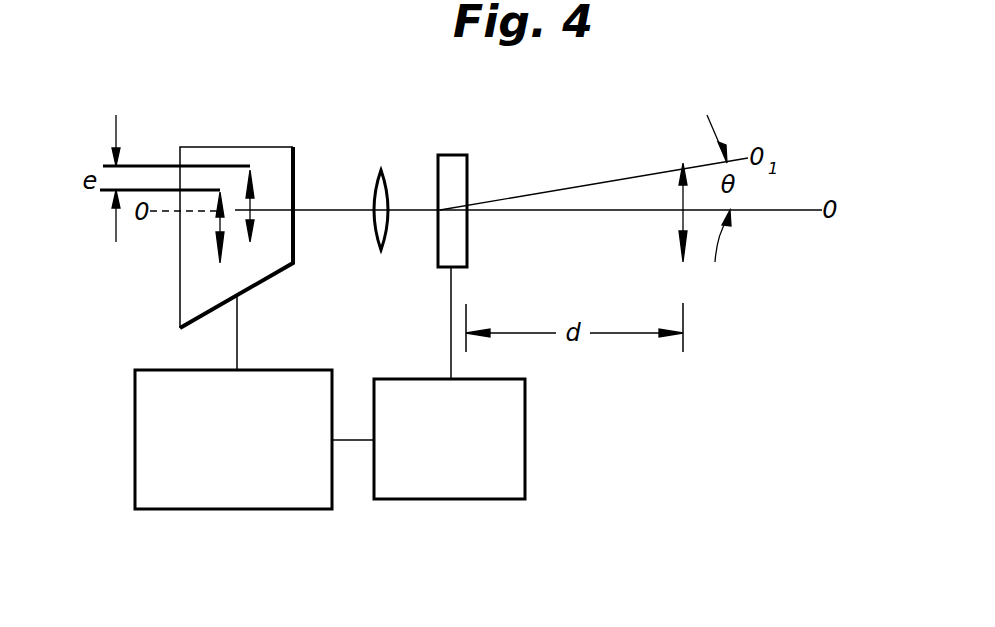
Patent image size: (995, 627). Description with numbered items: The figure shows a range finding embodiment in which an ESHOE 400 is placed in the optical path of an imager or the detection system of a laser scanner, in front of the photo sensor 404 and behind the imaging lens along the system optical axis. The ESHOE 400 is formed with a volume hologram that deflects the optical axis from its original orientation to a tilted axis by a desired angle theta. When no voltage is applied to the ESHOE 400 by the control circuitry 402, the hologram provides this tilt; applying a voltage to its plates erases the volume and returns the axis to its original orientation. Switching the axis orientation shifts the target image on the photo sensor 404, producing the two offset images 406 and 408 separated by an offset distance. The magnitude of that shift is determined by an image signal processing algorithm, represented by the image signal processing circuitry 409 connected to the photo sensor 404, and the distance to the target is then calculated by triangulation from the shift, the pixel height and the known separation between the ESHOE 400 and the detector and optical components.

The ESHOE 400 is at (452, 154).
The control circuitry 402 is at (440, 502).
The photo sensor 404 is at (233, 147).
The offset image 406 is at (218, 232).
The offset image 408 is at (253, 202).
The image signal processing circuitry 409 is at (231, 510).